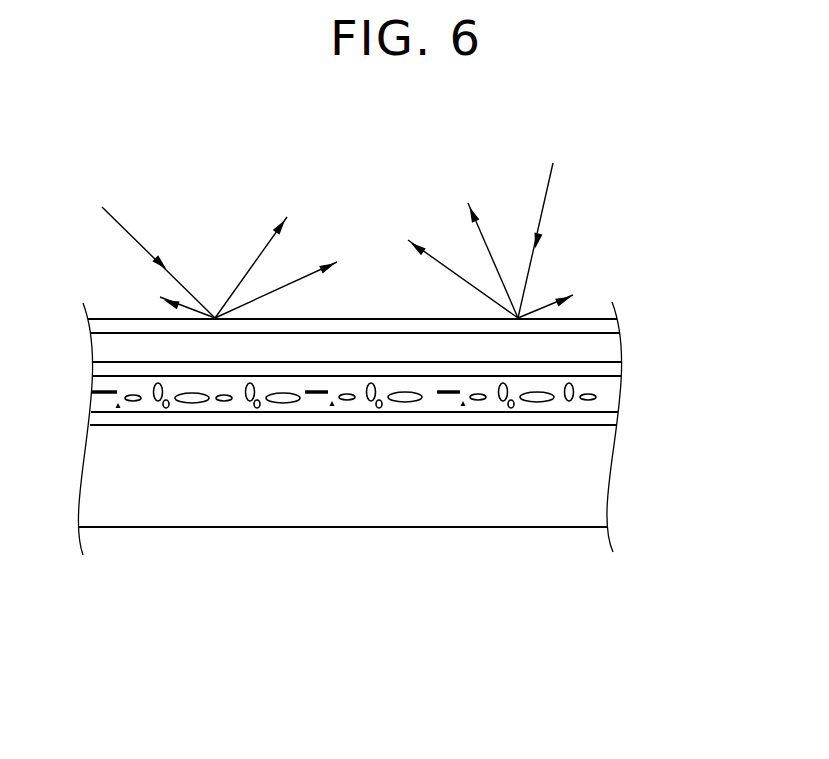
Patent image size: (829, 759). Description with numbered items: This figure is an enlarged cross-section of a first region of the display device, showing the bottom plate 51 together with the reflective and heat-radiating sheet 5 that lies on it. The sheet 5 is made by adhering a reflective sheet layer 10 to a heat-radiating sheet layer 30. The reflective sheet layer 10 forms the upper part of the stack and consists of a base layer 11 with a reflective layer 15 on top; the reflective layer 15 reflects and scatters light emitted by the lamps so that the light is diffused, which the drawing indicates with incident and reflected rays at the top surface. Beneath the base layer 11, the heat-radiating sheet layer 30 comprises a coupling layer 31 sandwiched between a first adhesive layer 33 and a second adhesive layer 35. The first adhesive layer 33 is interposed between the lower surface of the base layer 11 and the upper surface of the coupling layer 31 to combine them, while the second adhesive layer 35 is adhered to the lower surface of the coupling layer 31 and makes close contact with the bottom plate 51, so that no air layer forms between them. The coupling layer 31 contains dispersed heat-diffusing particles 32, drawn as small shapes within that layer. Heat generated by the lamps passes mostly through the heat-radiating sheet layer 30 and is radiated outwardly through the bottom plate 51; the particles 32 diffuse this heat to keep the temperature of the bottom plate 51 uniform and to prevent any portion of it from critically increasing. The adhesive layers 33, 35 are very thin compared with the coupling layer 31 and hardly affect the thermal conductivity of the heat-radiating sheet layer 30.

The reflective and heat-radiating sheet 5 is at (736, 297).
The reflective sheet layer 10 is at (694, 297).
The base layer 11 is at (598, 348).
The reflective layer 15 is at (598, 324).
The heat-radiating sheet layer 30 is at (694, 355).
The coupling layer 31 is at (598, 390).
The heat-diffusing particles 32 is at (402, 398).
The first adhesive layer 33 is at (598, 370).
The second adhesive layer 35 is at (598, 417).
The bottom plate 51 is at (588, 488).